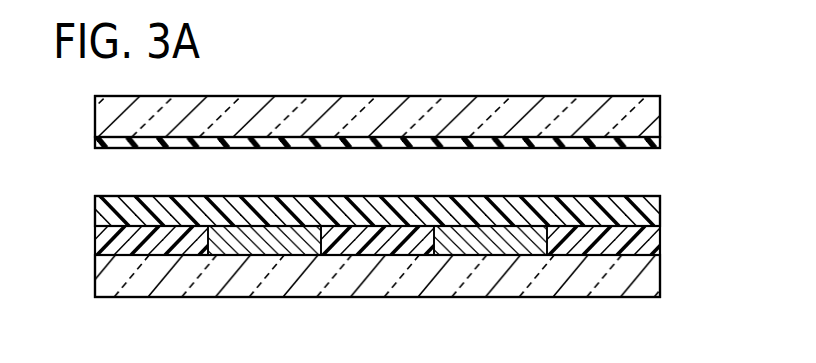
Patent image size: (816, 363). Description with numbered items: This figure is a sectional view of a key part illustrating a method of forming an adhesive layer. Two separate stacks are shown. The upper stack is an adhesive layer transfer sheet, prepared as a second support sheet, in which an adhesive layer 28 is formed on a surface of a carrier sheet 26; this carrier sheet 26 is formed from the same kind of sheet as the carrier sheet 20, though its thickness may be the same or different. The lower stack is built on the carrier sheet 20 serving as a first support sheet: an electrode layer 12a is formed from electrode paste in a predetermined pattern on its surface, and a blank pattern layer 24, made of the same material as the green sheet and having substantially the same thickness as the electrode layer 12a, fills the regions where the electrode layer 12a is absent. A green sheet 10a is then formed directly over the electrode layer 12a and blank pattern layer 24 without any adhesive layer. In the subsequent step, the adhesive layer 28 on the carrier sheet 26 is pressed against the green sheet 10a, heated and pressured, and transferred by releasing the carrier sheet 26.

The carrier sheet 26 is at (645, 108).
The adhesive layer 28 is at (648, 140).
The green sheet 10a is at (637, 212).
The blank pattern layer 24 is at (648, 243).
The electrode layer 12a is at (268, 242).
The carrier sheet 20 is at (648, 278).